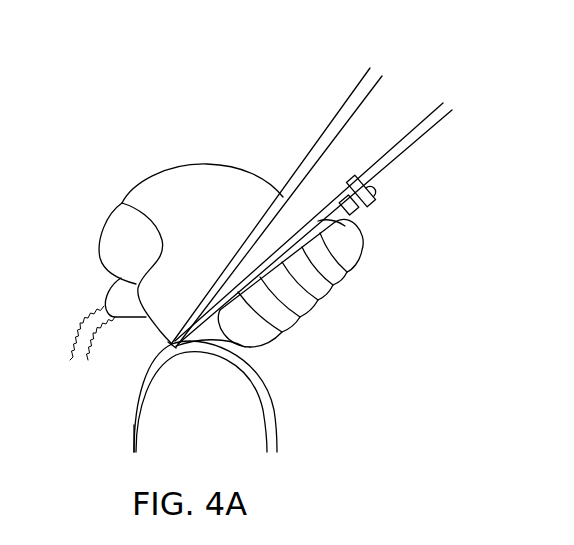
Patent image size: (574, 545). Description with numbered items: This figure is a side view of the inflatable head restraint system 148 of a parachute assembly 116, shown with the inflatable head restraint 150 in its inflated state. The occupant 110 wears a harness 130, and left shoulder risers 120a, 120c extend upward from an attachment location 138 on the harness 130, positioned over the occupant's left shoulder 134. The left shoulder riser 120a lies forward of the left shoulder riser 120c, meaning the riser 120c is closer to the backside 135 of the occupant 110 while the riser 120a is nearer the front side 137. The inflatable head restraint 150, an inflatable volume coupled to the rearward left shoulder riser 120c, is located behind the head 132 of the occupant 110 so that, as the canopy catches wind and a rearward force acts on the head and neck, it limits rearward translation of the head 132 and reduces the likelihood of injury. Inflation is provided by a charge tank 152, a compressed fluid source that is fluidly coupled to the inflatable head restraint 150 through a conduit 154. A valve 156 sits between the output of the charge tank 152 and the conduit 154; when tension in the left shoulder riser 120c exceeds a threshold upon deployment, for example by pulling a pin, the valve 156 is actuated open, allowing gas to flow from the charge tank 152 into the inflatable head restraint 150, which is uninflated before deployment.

The occupant 110 is at (103, 193).
The parachute assembly 116 is at (222, 69).
The left shoulder riser 120a is at (330, 122).
The left shoulder riser 120c is at (424, 124).
The harness 130 is at (263, 386).
The head 132 is at (172, 173).
The left shoulder 134 is at (204, 430).
The backside 135 is at (280, 428).
The front side 137 is at (134, 432).
The attachment location 138 is at (168, 347).
The inflatable head restraint system 148 is at (433, 198).
The inflatable head restraint 150 is at (340, 286).
The charge tank 152 is at (378, 200).
The conduit 154 is at (350, 228).
The valve 156 is at (341, 198).